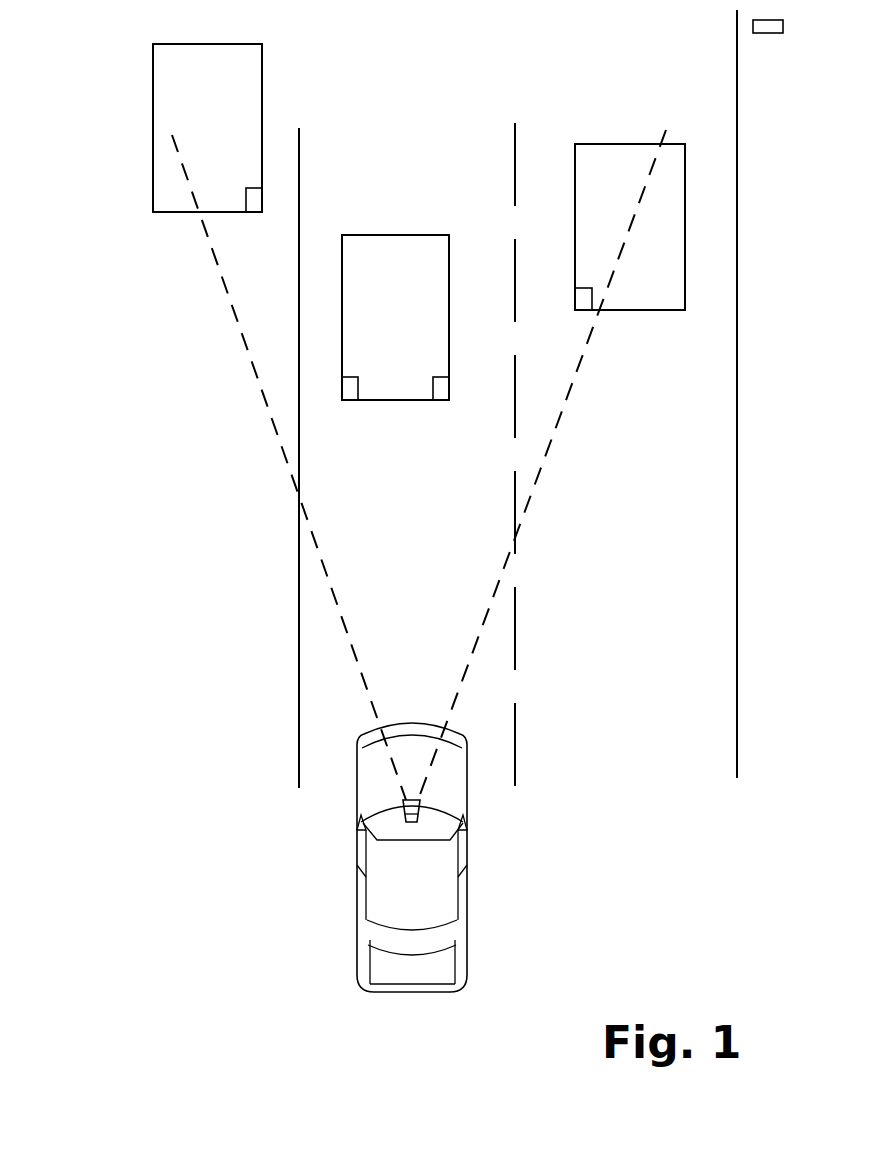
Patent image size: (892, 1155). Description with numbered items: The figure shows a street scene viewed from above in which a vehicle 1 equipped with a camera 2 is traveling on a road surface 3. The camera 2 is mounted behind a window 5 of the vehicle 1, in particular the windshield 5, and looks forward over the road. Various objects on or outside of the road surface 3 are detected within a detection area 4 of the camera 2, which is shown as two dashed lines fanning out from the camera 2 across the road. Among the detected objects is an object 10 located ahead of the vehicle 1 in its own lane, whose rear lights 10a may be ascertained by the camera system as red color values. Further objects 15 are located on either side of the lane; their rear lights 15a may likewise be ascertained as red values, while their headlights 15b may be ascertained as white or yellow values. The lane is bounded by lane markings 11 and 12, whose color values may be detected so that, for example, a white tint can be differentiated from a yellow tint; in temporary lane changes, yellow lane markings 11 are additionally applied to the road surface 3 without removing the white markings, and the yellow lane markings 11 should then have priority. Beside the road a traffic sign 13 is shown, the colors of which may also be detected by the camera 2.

The vehicle 1 is at (412, 857).
The camera 2 is at (420, 818).
The road surface 3 is at (482, 399).
The detection area 4 is at (247, 318).
The windshield 5 is at (380, 822).
The object 10 is at (391, 378).
The rear lights 10a is at (440, 392).
The lane markings 11 is at (518, 727).
The lane markings 12 is at (300, 728).
The traffic signs 13 is at (768, 30).
The object 15 is at (180, 100).
The rear lights 15a is at (585, 300).
The headlights 15b is at (254, 210).